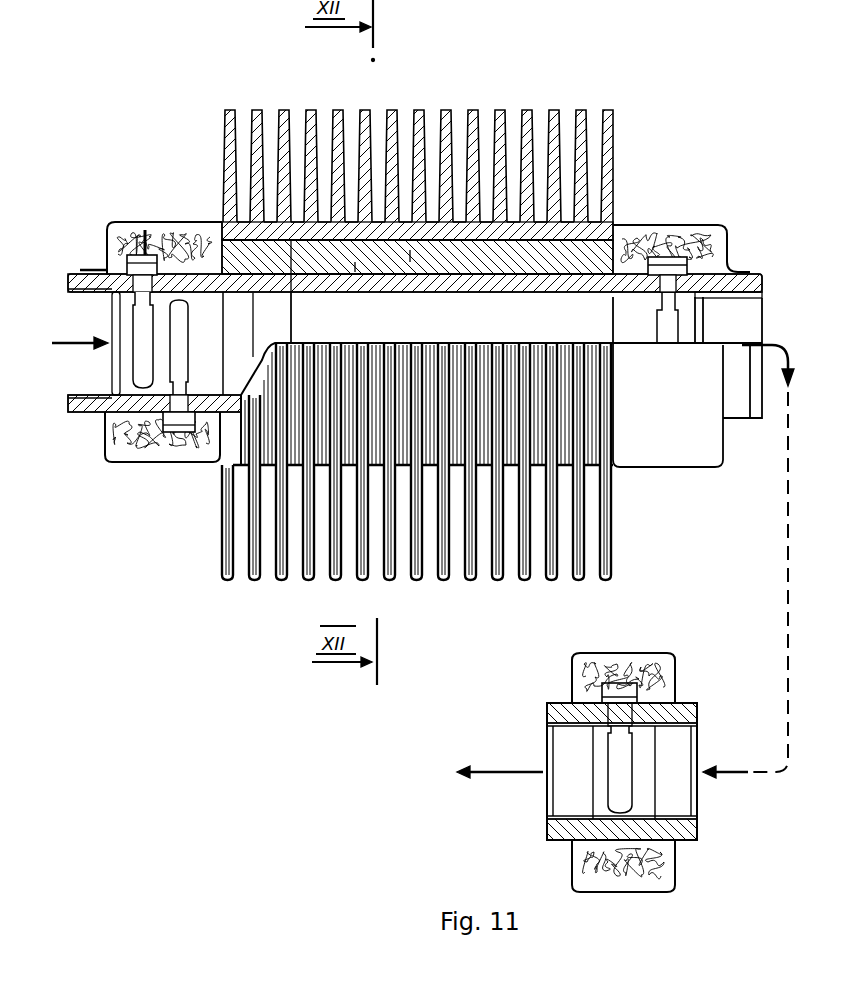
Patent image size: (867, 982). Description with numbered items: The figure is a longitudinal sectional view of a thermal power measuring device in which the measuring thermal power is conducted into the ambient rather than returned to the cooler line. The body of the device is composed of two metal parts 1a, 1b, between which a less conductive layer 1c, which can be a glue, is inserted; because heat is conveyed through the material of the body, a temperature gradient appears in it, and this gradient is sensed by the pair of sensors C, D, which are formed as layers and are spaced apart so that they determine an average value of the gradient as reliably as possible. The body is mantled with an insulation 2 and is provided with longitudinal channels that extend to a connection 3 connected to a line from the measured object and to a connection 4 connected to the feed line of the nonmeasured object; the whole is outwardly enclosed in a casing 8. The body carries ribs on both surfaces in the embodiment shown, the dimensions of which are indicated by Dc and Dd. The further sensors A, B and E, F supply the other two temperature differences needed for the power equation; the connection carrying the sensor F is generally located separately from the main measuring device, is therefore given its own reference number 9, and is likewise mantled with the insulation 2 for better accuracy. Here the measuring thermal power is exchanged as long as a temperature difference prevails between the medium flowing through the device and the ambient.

The metal part 1a is at (248, 232).
The metal part 1b is at (224, 210).
The layer 1c is at (221, 224).
The insulation 2 is at (160, 463).
The connection 3 is at (78, 412).
The connection 4 is at (753, 277).
The casing 8 is at (138, 463).
The connection with sensor F 9 is at (652, 668).
The sensor A is at (97, 272).
The sensor B is at (703, 227).
The sensor C is at (355, 266).
The sensor D is at (410, 258).
The sensor E is at (106, 418).
The sensor F is at (620, 763).
The diameter Dc is at (238, 331).
The diameter Dd is at (276, 318).